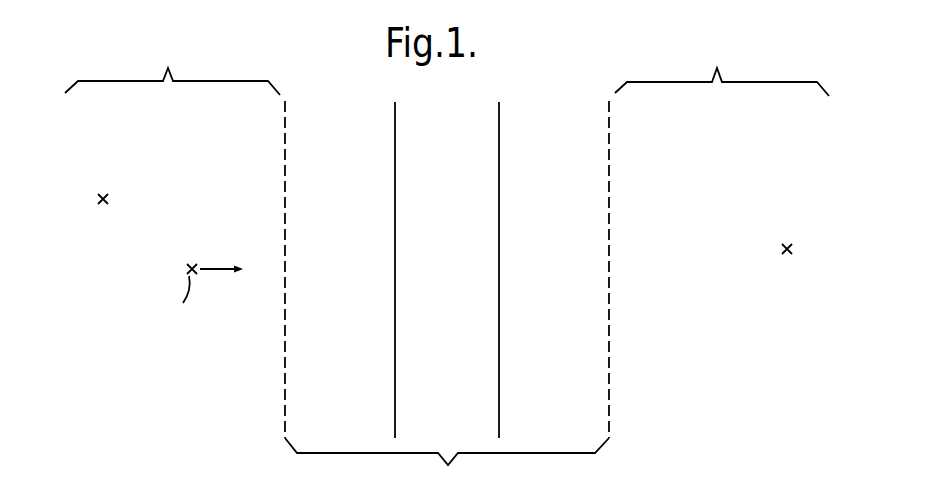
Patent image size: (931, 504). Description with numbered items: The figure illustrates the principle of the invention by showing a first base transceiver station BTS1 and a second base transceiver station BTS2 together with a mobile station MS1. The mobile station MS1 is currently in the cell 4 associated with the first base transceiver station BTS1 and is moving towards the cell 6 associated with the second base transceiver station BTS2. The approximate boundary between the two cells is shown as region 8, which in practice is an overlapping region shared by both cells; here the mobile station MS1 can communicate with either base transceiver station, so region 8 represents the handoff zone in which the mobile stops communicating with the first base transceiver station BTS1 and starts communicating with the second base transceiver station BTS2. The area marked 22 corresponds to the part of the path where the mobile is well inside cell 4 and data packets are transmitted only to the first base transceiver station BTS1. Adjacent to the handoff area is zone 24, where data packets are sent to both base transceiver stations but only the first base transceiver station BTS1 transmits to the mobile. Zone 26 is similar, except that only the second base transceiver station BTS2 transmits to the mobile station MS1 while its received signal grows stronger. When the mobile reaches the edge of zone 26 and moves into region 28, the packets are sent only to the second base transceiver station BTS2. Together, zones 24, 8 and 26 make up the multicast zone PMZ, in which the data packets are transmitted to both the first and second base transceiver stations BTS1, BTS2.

The cell 4 is at (158, 245).
The cell 6 is at (760, 211).
The overlapping region 8 is at (463, 217).
The region 22 is at (172, 69).
The zone 24 is at (331, 127).
The zone 26 is at (544, 127).
The region 28 is at (722, 70).
The first base transceiver station BTS1 is at (102, 182).
The second base transceiver station BTS2 is at (783, 237).
The mobile station MS1 is at (200, 296).
The multicast zone PMZ is at (447, 465).